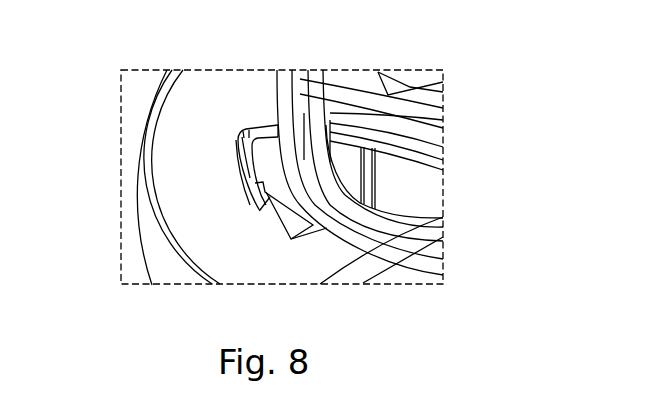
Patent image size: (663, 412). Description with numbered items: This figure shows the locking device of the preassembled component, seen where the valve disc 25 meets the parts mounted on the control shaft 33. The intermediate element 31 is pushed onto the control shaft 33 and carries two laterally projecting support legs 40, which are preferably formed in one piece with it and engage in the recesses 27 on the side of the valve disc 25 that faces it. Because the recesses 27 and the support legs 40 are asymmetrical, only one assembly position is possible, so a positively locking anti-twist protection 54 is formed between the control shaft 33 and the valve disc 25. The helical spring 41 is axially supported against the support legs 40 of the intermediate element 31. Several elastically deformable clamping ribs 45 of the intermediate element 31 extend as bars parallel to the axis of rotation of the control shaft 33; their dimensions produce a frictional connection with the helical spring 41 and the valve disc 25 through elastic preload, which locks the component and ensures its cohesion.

The valve disc 25 is at (297, 262).
The recesses 27 is at (291, 239).
The intermediate element 31 is at (423, 188).
The control shaft 33 is at (402, 90).
The support legs 40 is at (258, 212).
The helical spring 41 is at (425, 145).
The clamping ribs 45 is at (319, 143).
The anti-twist protection 54 is at (225, 172).